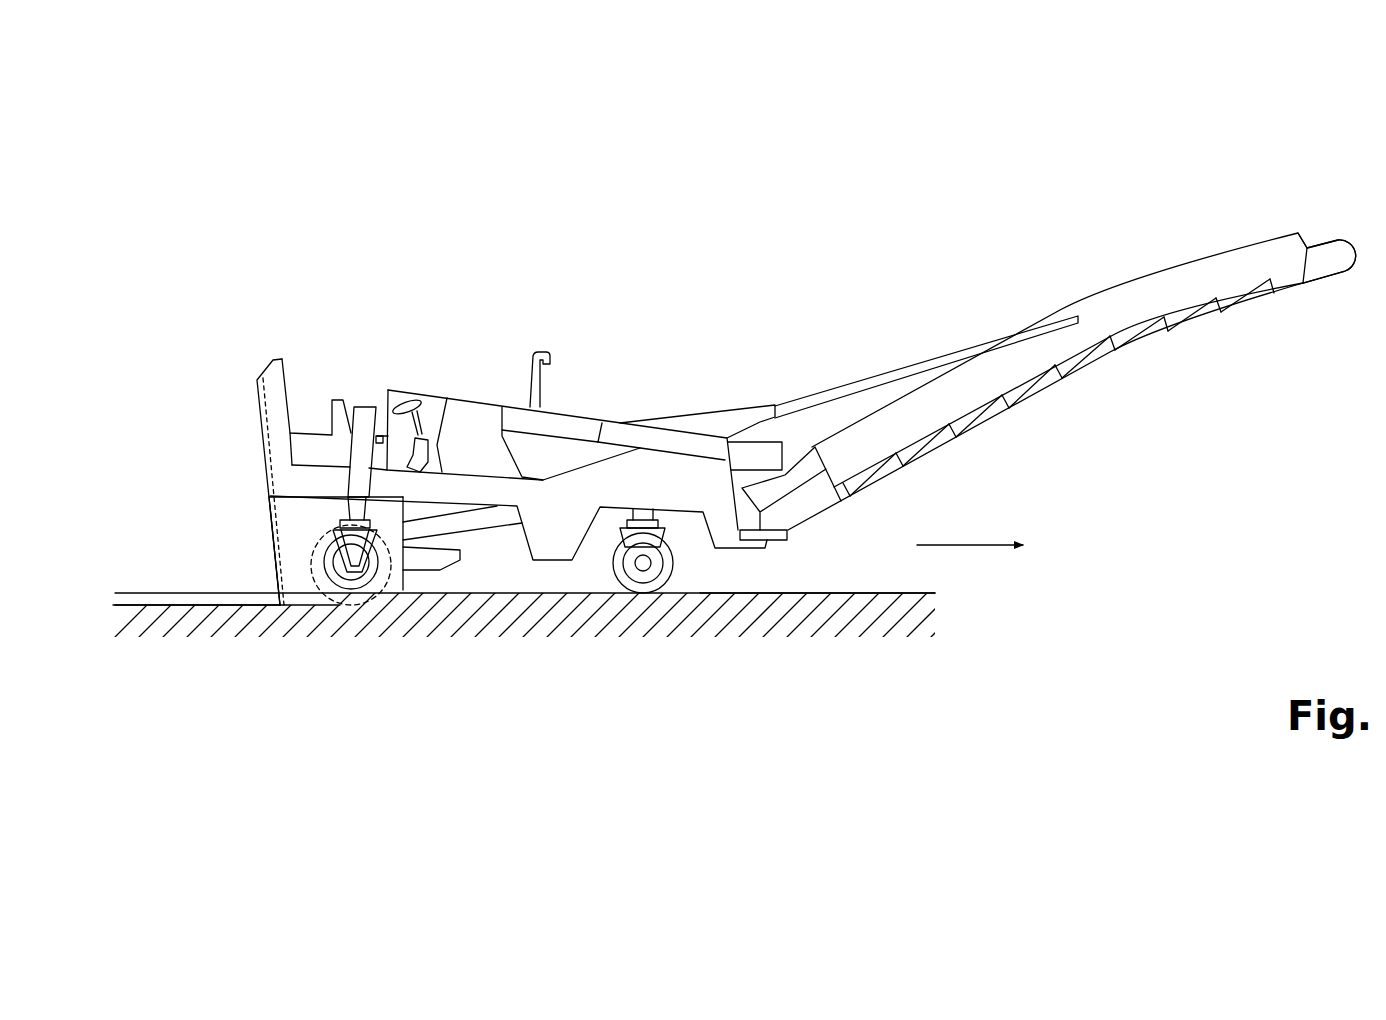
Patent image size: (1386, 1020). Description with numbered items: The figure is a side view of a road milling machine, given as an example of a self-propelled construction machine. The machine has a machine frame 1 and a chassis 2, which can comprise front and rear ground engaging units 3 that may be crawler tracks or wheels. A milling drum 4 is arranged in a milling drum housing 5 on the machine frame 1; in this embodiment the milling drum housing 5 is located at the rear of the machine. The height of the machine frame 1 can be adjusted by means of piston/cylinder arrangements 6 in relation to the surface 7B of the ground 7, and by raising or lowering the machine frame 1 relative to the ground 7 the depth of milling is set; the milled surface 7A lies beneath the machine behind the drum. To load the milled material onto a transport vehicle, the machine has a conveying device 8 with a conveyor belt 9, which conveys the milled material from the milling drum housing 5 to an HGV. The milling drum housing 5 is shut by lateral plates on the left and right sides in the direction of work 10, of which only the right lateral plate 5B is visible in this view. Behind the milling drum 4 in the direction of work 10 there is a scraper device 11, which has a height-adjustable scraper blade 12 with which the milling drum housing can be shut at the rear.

The machine frame 1 is at (552, 556).
The chassis 2 is at (416, 579).
The ground engaging units 3 is at (643, 592).
The milling drum 4 is at (350, 597).
The milling drum housing 5 is at (297, 578).
The right lateral plate 5B is at (293, 535).
The piston/cylinder arrangements 6 is at (367, 412).
The ground 7 is at (153, 637).
The milled ground surface 7A is at (157, 605).
The surface of the ground 7B is at (860, 592).
The conveying device 8 is at (1010, 370).
The conveyor belt 9 is at (1327, 240).
The direction of work 10 is at (965, 544).
The scraper device 11 is at (255, 506).
The scraper blade 12 is at (280, 571).